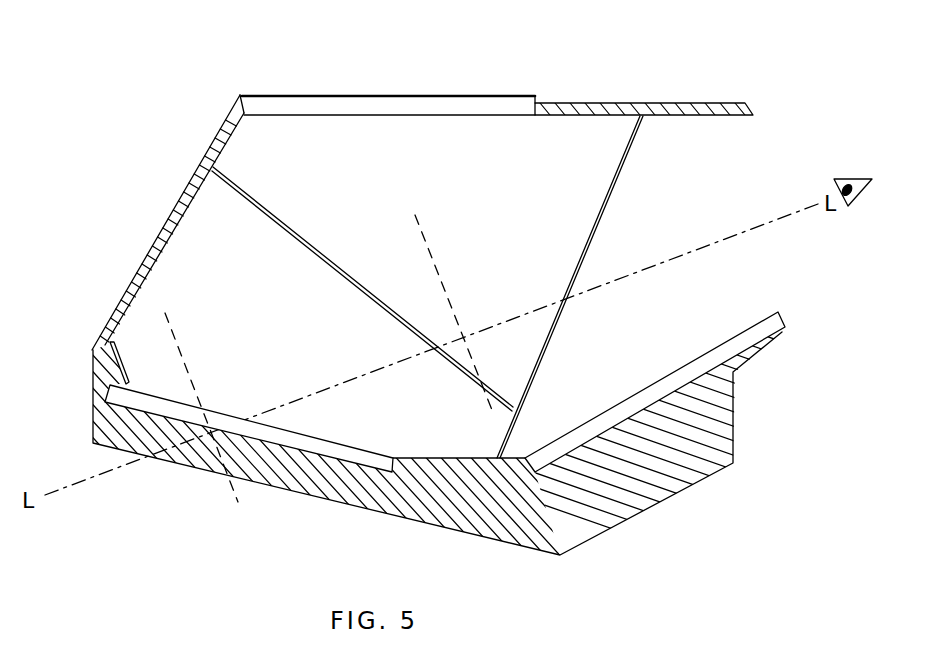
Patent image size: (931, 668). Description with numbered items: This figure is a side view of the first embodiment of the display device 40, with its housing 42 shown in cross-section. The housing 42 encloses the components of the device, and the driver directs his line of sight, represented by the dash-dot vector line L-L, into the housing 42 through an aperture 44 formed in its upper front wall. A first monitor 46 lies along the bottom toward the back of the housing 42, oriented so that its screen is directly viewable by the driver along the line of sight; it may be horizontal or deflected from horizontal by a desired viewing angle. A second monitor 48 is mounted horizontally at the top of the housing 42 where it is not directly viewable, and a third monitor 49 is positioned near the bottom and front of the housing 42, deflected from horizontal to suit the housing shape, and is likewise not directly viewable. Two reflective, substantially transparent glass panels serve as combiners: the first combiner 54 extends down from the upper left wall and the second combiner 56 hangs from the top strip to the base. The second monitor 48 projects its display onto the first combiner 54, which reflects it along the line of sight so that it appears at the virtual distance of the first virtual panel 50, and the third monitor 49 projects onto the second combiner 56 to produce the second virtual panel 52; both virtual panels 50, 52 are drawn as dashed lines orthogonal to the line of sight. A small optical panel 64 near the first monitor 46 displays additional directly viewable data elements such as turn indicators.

The display device 40 is at (180, 50).
The housing 42 is at (465, 535).
The aperture 44 is at (774, 157).
The first monitor 46 is at (321, 433).
The second monitor 48 is at (428, 96).
The third monitor 49 is at (672, 372).
The first virtual panel 50 is at (230, 500).
The second virtual panel 52 is at (433, 233).
The first combiner 54 is at (248, 192).
The second combiner 56 is at (613, 183).
The optical panel 64 is at (127, 372).